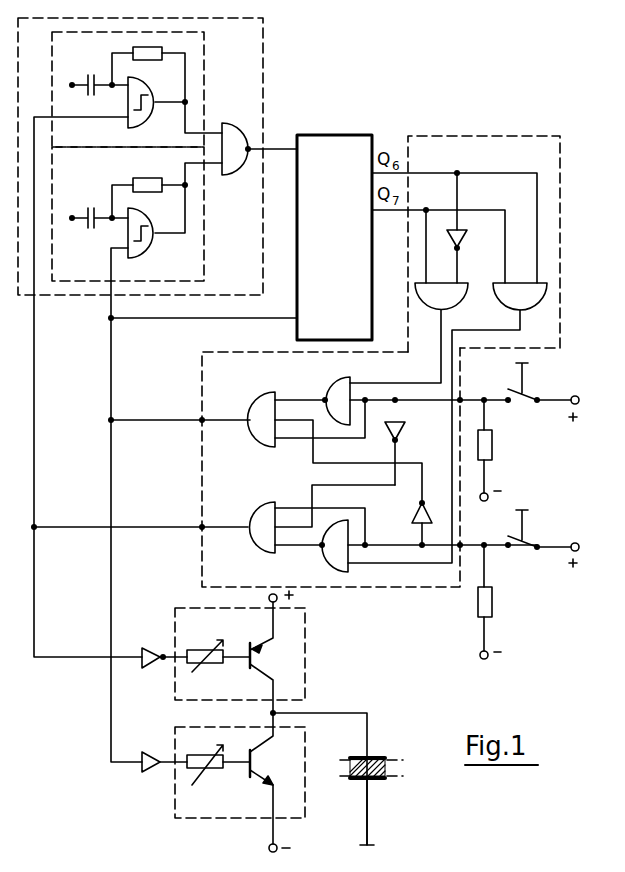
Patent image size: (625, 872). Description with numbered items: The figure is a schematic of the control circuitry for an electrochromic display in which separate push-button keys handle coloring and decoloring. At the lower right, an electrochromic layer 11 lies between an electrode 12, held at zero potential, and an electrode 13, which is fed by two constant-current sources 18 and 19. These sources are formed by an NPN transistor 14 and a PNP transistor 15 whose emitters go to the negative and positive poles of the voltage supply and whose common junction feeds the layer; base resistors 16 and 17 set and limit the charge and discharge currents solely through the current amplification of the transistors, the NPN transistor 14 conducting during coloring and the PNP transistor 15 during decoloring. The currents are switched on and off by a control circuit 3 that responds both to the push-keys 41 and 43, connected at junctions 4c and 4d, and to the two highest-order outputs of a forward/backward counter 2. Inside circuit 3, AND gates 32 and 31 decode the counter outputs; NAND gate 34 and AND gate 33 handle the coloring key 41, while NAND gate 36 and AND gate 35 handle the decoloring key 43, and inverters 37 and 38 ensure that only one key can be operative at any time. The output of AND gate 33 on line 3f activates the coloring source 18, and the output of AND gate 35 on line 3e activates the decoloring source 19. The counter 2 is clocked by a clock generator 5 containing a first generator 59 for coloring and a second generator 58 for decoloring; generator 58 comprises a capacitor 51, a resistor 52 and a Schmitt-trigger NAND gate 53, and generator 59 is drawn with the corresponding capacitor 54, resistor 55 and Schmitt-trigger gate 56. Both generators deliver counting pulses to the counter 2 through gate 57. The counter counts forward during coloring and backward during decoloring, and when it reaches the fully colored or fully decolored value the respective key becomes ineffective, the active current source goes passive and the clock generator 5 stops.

The forward/backward counter 2 is at (296, 262).
The control circuit 3 is at (462, 135).
The clock generator 5 is at (264, 60).
The second generator 58 is at (52, 60).
The first generator 59 is at (205, 220).
The capacitor 51 is at (87, 91).
The resistor 52 is at (135, 50).
The Schmitt-trigger NAND gate 53 is at (155, 118).
The capacitor 54 is at (84, 213).
The resistor 55 is at (140, 182).
The Schmitt trigger gate 56 is at (160, 247).
The NAND gate 57 is at (237, 137).
The AND gate 31 is at (518, 293).
The AND gate 32 is at (462, 280).
The AND gate 33 is at (268, 395).
The NAND gate 34 is at (347, 392).
The AND gate 35 is at (262, 517).
The NAND gate 36 is at (337, 553).
The inverter 37 is at (405, 423).
The inverter 38 is at (413, 520).
The control line 3f is at (200, 418).
The control line 3e is at (200, 528).
The junction node 4c is at (462, 400).
The junction node 4d is at (462, 545).
The push-key for coloring 41 is at (529, 375).
The push-key for decoloring 43 is at (527, 521).
The constant-current source 19 is at (305, 630).
The constant-current source 18 is at (305, 730).
The base resistor 17 is at (210, 643).
The base resistor 16 is at (197, 780).
The PNP transistor 15 is at (257, 665).
The NPN transistor 14 is at (260, 760).
The electrode 13 is at (370, 755).
The electrochromic layer 11 is at (352, 772).
The electrode 12 is at (369, 785).